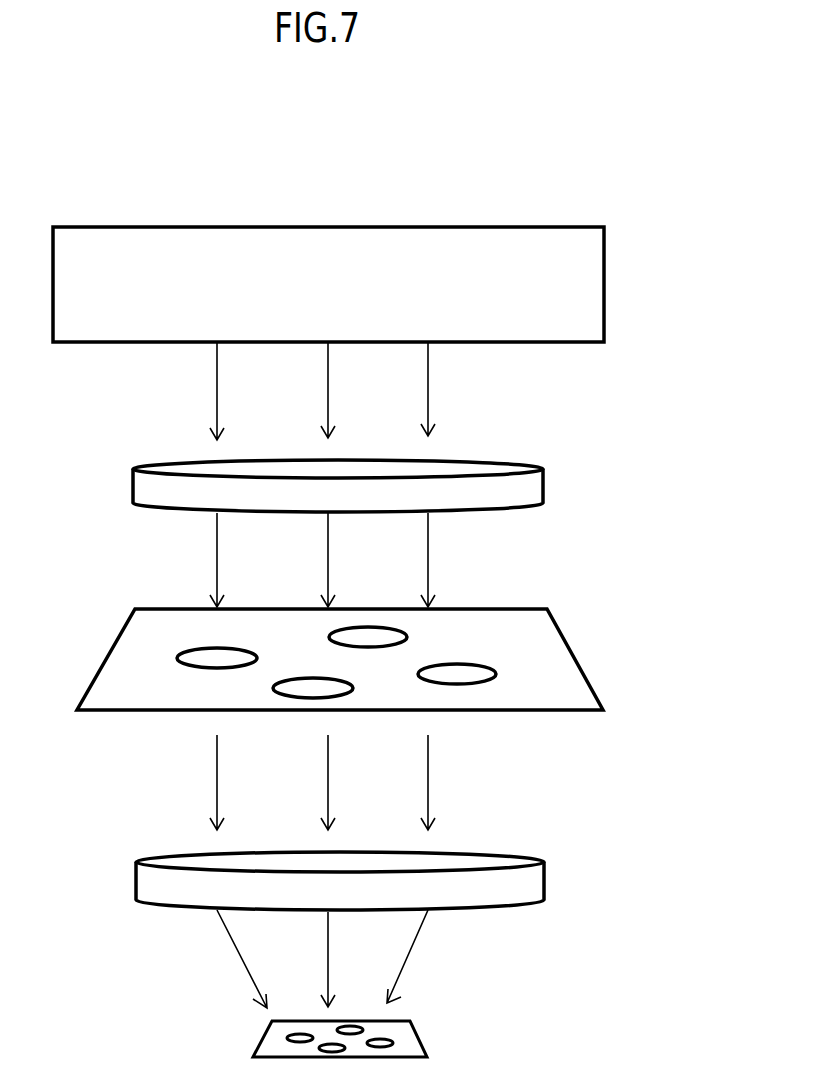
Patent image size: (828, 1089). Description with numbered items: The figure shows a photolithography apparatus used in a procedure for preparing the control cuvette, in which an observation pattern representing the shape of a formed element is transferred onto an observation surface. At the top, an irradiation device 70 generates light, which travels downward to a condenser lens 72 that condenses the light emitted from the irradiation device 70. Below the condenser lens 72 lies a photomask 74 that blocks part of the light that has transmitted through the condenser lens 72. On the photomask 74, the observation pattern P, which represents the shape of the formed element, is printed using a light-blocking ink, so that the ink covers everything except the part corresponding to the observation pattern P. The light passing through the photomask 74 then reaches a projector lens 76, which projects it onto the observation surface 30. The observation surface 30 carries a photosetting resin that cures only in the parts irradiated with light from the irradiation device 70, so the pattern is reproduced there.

The irradiation device 70 is at (604, 278).
The condenser lens 72 is at (543, 473).
The photomask 74 is at (361, 659).
The observation pattern P is at (259, 694).
The projector lens 76 is at (544, 880).
The observation surface 30 is at (418, 1033).